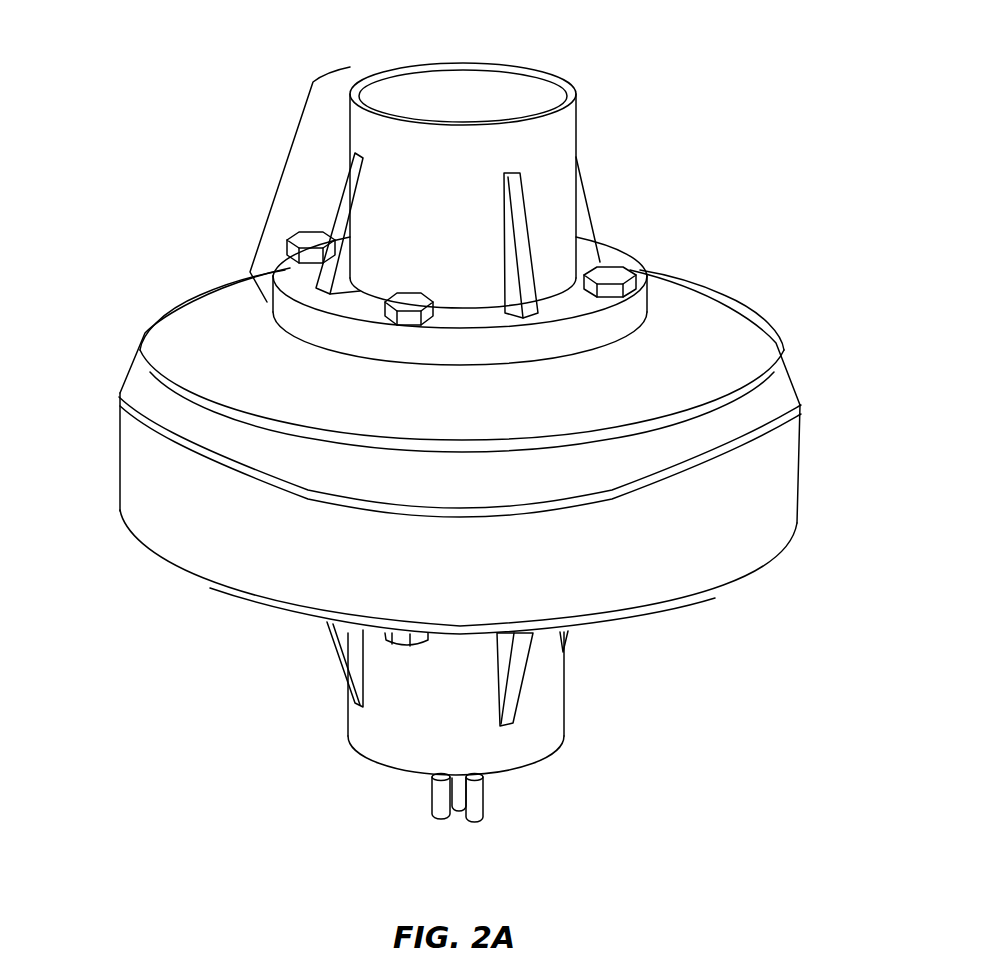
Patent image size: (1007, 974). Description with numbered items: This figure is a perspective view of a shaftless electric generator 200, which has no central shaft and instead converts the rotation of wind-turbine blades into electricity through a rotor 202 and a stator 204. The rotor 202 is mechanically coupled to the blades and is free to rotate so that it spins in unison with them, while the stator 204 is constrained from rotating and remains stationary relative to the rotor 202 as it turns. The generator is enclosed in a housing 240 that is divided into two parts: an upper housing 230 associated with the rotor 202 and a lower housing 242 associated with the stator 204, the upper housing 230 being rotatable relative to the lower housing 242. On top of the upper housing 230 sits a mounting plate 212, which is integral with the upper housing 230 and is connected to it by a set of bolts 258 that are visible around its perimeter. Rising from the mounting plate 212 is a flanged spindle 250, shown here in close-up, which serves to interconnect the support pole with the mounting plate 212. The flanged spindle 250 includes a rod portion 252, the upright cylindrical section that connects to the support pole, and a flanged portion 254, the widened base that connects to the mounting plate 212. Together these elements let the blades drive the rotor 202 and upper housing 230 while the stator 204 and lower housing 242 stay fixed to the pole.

The shaftless electric generator 200 is at (134, 66).
The rotor 202 is at (427, 350).
The stator 204 is at (450, 643).
The mounting plate 212 is at (499, 288).
The upper housing 230 is at (472, 346).
The housing 240 is at (822, 343).
The lower housing 242 is at (458, 595).
The flanged spindle 250 is at (283, 176).
The rod portion 252 is at (471, 169).
The flanged portion 254 is at (451, 315).
The bolts 258 is at (461, 325).